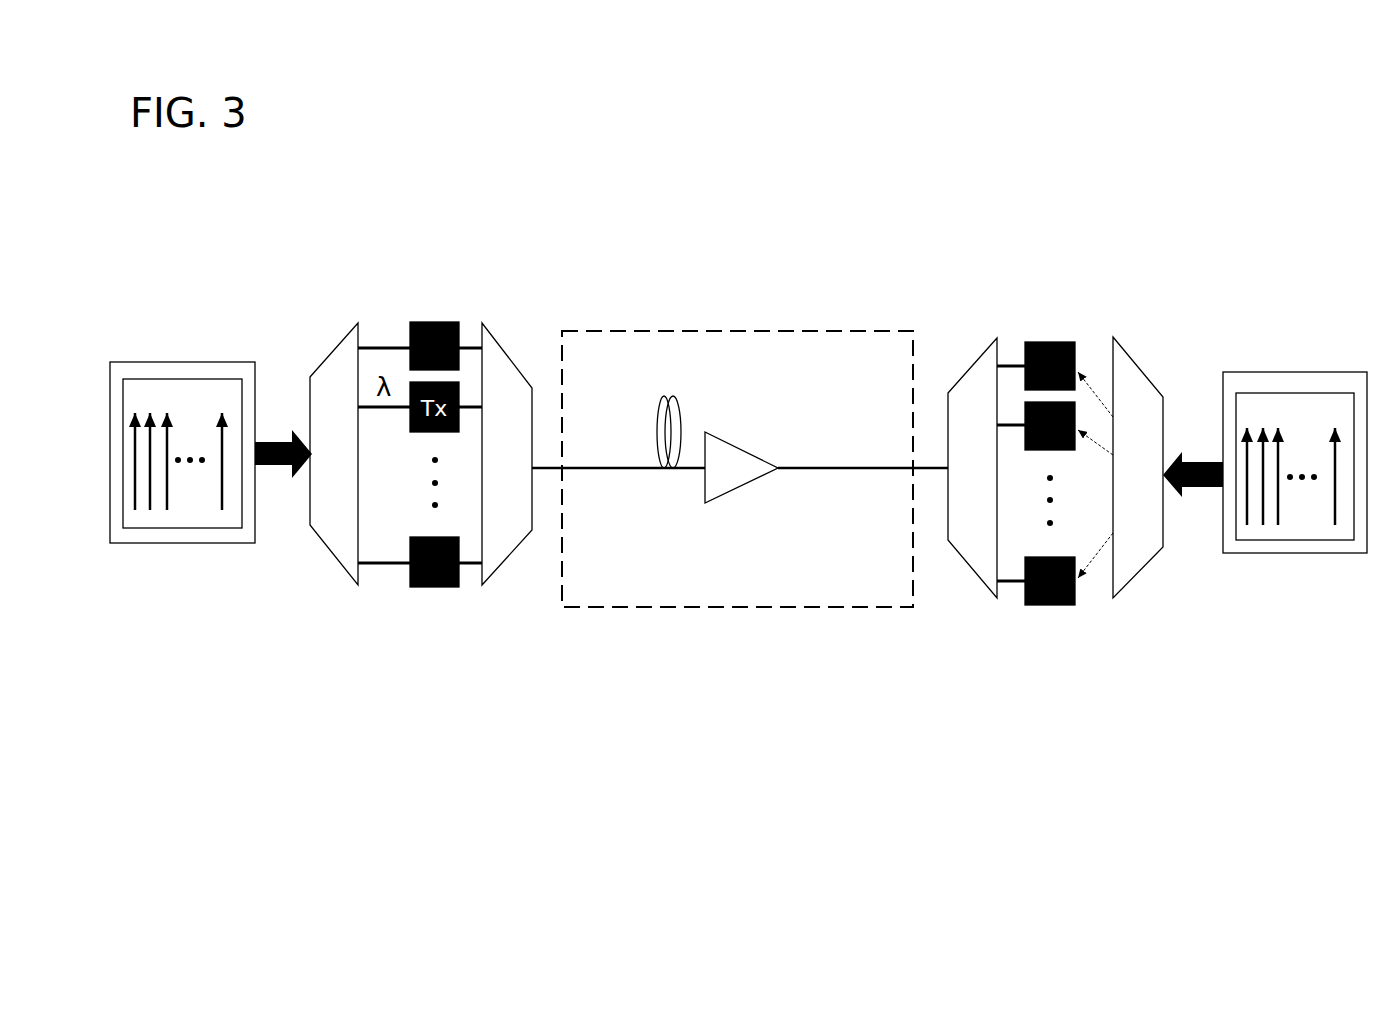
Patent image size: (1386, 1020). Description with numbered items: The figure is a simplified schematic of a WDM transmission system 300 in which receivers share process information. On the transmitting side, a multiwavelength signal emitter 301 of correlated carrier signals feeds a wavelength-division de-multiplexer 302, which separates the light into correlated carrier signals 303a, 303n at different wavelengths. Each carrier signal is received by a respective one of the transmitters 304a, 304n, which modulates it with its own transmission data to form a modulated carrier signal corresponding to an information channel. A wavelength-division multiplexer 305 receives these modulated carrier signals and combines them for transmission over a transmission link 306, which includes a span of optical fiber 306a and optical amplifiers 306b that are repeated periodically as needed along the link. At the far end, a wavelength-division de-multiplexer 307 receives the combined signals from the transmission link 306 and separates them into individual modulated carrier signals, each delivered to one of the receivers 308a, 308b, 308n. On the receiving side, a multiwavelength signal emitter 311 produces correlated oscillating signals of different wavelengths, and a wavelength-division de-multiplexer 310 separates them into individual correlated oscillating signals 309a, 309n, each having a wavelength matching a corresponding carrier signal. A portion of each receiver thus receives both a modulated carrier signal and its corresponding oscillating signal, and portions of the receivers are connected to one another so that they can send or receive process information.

The WDM transmission system 300 is at (580, 170).
The multiwavelength signal emitter 301 is at (181, 343).
The wavelength-division de-multiplexer 302 is at (325, 342).
The correlated carrier signal 303a is at (382, 300).
The correlated carrier signal 303n is at (382, 580).
The transmitter 304a is at (432, 310).
The transmitter 304n is at (433, 595).
The wavelength-division multiplexer 305 is at (513, 342).
The transmission link 306 is at (726, 322).
The span of optical fiber 306a is at (664, 495).
The optical amplifier 306b is at (757, 495).
The wavelength-division de-multiplexer 307 is at (966, 345).
The receiver 308a is at (1043, 332).
The receiver 308b is at (1023, 452).
The receiver 308n is at (1045, 607).
The correlated oscillating signal 309a is at (1098, 373).
The correlated oscillating signal 309n is at (1098, 563).
The wavelength-division de-multiplexer 310 is at (1142, 345).
The multiwavelength signal emitter 311 is at (1290, 343).